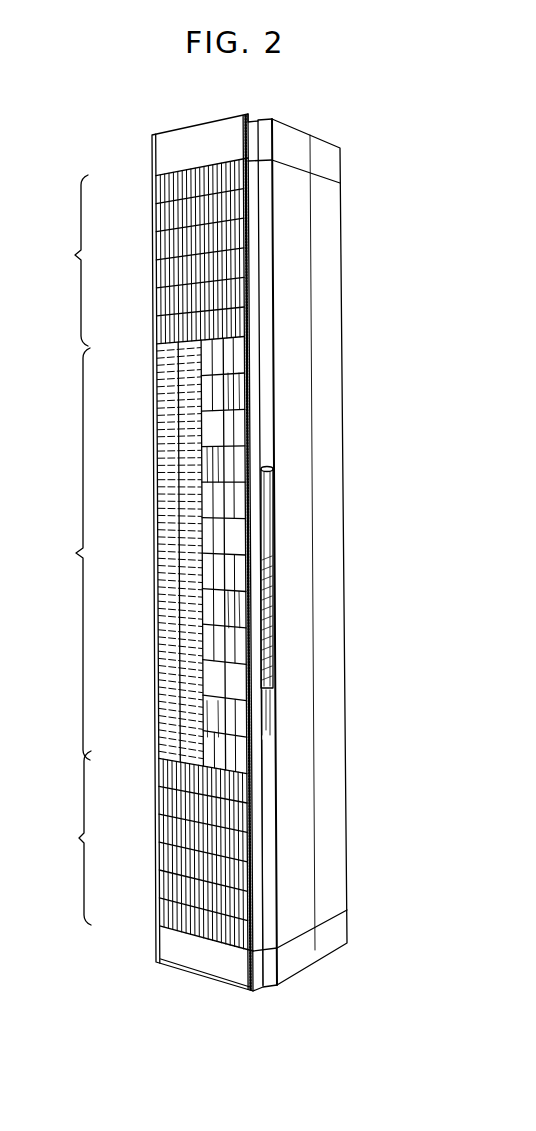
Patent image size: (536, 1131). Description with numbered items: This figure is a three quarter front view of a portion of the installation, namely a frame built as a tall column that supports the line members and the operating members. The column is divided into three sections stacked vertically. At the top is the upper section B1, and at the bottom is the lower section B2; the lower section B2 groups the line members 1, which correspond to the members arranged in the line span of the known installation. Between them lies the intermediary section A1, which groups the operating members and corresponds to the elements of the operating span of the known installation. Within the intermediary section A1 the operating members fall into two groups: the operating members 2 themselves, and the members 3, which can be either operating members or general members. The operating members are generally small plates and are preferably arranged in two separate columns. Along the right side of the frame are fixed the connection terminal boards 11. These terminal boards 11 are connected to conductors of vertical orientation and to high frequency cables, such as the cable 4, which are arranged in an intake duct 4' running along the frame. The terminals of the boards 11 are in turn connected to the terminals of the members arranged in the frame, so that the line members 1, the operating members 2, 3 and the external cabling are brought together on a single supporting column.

The line members 1 is at (167, 327).
The operating members 2 is at (183, 490).
The operating or general members 3 is at (227, 428).
The high frequency cable 4 is at (328, 601).
The intake duct 4' is at (330, 862).
The connection terminal boards 11 is at (247, 280).
The upper section B1 is at (68, 260).
The intermediary section A1 is at (71, 554).
The lower section B2 is at (73, 838).